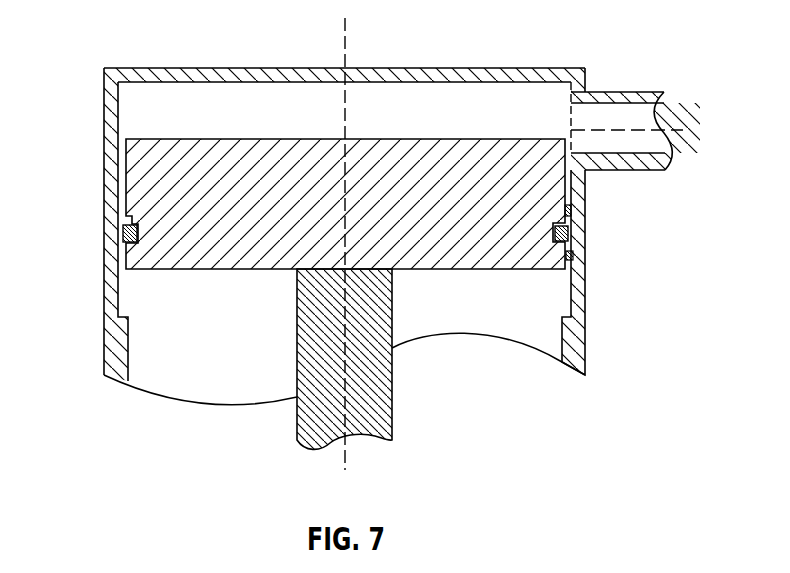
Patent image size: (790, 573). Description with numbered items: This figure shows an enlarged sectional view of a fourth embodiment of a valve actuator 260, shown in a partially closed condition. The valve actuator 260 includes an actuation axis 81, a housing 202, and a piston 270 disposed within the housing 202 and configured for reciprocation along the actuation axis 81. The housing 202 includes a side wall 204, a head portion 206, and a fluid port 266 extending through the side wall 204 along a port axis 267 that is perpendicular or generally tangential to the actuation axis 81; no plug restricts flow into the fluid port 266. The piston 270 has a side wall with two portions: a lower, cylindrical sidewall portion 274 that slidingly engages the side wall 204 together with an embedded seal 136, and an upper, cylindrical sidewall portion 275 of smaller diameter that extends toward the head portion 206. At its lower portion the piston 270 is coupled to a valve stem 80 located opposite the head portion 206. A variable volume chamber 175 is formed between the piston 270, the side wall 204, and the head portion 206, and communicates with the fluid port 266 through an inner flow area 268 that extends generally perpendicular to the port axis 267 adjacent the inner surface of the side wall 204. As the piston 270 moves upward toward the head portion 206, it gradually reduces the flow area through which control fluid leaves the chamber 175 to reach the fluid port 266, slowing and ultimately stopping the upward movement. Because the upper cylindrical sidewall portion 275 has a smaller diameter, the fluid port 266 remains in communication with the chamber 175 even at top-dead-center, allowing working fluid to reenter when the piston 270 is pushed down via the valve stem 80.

The valve stem 80 is at (310, 415).
The actuation axis 81 is at (345, 38).
The embedded seal 136 is at (571, 230).
The variable volume chamber 175 is at (273, 120).
The housing 202 is at (115, 112).
The side wall 204 is at (105, 172).
The head portion 206 is at (292, 67).
The valve actuator 260 is at (172, 67).
The fluid port 266 is at (655, 93).
The port axis 267 is at (683, 130).
The inner flow area 268 is at (572, 118).
The piston 270 is at (148, 177).
The lower cylindrical sidewall portion 274 is at (574, 257).
The upper cylindrical sidewall portion 275 is at (574, 208).